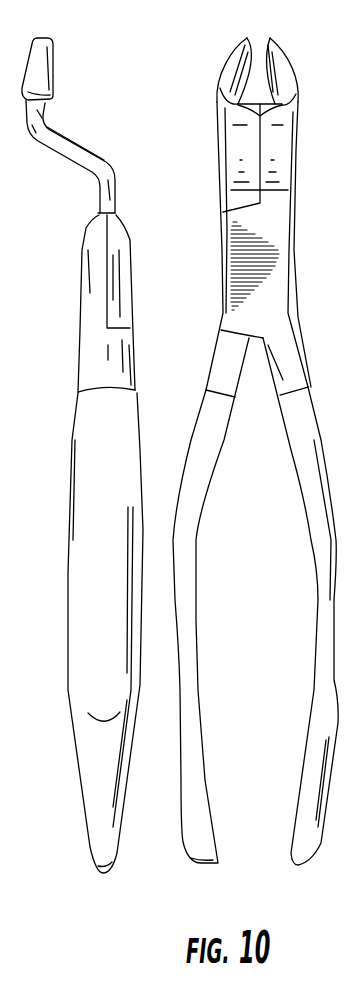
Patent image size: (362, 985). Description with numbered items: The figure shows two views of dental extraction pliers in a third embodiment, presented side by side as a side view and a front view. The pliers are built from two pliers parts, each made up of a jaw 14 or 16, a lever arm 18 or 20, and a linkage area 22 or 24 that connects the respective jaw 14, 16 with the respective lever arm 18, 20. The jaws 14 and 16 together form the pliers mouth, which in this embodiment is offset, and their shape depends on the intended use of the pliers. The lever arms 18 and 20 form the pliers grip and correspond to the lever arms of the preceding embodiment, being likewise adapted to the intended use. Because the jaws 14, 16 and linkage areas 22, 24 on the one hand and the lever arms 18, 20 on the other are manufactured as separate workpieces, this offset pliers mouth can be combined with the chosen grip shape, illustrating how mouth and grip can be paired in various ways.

The jaw 14 is at (233, 80).
The jaw 16 is at (40, 72).
The lever arm 18 is at (102, 500).
The lever arm 20 is at (201, 507).
The linkage area 22 is at (97, 305).
The linkage area 24 is at (118, 278).